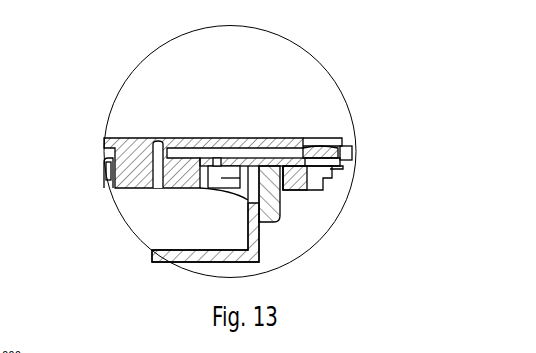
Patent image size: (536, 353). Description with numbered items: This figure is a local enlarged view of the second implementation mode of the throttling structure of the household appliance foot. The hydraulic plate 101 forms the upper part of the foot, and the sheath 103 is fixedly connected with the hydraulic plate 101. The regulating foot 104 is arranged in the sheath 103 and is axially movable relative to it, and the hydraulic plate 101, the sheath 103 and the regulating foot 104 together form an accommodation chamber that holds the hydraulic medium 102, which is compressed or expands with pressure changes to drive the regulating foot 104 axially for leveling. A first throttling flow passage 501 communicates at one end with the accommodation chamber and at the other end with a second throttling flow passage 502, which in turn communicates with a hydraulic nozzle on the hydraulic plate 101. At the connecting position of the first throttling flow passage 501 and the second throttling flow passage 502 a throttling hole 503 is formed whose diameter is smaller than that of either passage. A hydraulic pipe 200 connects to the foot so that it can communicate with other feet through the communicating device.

The hydraulic plate 101 is at (128, 138).
The hydraulic medium 102 is at (150, 222).
The sheath 103 is at (281, 212).
The regulating foot 104 is at (261, 252).
The hydraulic pipe 200 is at (350, 145).
The first throttling flow passage 501 is at (122, 188).
The second throttling flow passage 502 is at (198, 154).
The throttling hole 503 is at (160, 141).